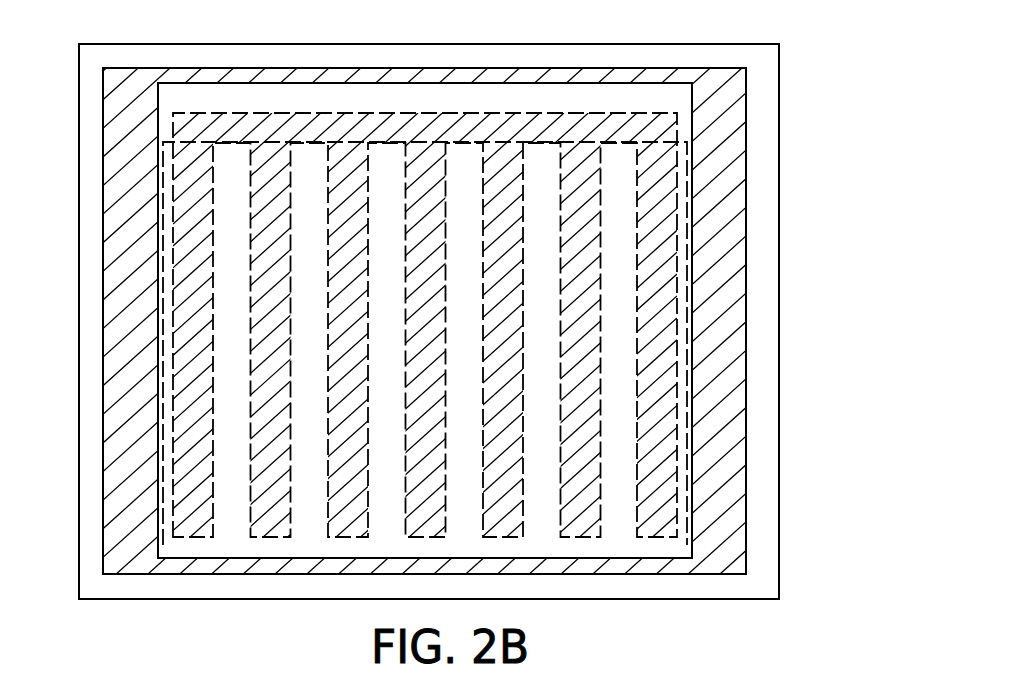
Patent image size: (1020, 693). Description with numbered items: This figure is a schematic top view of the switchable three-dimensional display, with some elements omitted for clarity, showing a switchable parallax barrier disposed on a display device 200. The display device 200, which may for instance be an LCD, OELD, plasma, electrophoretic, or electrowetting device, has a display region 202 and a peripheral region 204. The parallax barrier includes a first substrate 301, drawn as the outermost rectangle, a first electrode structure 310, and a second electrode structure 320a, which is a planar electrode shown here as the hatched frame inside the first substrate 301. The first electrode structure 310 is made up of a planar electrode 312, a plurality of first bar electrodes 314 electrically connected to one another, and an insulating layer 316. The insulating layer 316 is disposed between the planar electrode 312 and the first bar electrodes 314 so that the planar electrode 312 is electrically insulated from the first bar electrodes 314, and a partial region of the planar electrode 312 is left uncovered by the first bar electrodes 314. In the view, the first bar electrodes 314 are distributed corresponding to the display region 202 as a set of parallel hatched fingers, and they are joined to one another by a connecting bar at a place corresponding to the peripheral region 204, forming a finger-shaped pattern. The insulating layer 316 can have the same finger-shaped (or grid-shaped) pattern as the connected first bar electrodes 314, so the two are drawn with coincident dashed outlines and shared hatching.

The display device 200 is at (829, 400).
The display region 202 is at (692, 450).
The peripheral region 204 is at (757, 486).
The first substrate 301 is at (758, 582).
The first electrode structure 310 is at (829, 48).
The planar electrode 312 is at (627, 100).
The first bar electrodes 314 is at (700, 104).
The insulating layer 316 is at (662, 188).
The second electrode structure 320a is at (747, 245).